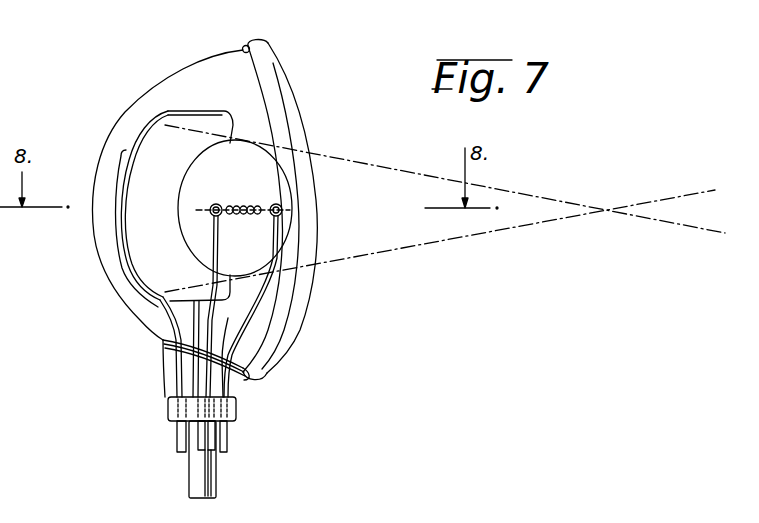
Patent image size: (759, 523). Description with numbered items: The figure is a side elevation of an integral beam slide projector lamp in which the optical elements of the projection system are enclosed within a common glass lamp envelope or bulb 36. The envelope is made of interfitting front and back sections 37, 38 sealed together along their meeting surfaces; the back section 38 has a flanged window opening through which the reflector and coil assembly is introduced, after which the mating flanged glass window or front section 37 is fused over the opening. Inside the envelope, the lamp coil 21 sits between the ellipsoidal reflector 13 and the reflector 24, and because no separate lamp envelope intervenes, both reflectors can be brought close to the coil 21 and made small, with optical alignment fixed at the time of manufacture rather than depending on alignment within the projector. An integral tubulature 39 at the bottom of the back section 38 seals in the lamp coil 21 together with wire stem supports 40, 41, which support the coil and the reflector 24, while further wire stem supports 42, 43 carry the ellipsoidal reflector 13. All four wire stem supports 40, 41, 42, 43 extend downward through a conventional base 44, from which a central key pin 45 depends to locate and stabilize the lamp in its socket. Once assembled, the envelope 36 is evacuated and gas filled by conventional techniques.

The ellipsoidal reflector 13 is at (141, 146).
The lamp coil 21 is at (241, 202).
The reflector 24 is at (252, 150).
The glass lamp envelope or bulb 36 is at (282, 52).
The front section 37 is at (306, 148).
The back section 38 is at (170, 70).
The tubulature 39 is at (162, 370).
The wire stem support 40 is at (211, 322).
The wire stem support 41 is at (250, 312).
The wire stem support 42 is at (167, 307).
The wire stem support 43 is at (198, 318).
The base 44 is at (168, 412).
The central key pin 45 is at (212, 474).